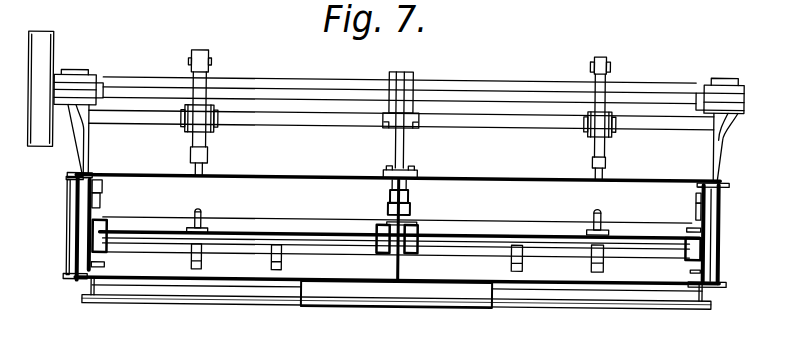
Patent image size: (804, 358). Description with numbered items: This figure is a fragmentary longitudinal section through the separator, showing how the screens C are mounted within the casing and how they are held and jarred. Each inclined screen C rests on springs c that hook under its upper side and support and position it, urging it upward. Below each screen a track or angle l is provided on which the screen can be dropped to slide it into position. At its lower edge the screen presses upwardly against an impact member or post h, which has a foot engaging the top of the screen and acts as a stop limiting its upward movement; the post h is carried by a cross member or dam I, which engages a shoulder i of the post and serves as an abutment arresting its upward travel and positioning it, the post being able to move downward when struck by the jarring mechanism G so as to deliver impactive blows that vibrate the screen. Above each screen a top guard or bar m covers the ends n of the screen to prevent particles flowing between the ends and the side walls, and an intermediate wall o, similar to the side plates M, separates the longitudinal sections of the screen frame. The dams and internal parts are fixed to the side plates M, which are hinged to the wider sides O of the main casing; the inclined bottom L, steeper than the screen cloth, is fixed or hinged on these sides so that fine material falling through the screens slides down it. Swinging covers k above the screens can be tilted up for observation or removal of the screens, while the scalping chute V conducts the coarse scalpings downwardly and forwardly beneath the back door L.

The impactive jarring or vibrating mechanism G is at (399, 77).
The inclined bottom L is at (405, 150).
The swinging cover k is at (332, 177).
The cross member or dam I is at (396, 230).
The top guard or bar m is at (102, 211).
The side plates M is at (699, 189).
The screens C is at (297, 231).
The rail bar w is at (324, 248).
The track or angle l is at (105, 266).
The springs c is at (210, 266).
The impact member or post h is at (203, 228).
The shoulder i is at (193, 228).
The ends of the screen n is at (413, 228).
The intermediate wall o is at (401, 268).
The wider sides of the main casing O is at (691, 235).
The scalping chute V is at (450, 299).